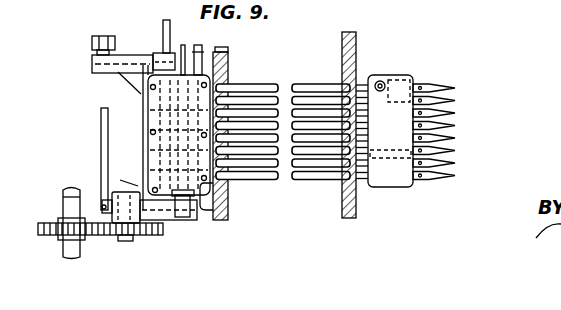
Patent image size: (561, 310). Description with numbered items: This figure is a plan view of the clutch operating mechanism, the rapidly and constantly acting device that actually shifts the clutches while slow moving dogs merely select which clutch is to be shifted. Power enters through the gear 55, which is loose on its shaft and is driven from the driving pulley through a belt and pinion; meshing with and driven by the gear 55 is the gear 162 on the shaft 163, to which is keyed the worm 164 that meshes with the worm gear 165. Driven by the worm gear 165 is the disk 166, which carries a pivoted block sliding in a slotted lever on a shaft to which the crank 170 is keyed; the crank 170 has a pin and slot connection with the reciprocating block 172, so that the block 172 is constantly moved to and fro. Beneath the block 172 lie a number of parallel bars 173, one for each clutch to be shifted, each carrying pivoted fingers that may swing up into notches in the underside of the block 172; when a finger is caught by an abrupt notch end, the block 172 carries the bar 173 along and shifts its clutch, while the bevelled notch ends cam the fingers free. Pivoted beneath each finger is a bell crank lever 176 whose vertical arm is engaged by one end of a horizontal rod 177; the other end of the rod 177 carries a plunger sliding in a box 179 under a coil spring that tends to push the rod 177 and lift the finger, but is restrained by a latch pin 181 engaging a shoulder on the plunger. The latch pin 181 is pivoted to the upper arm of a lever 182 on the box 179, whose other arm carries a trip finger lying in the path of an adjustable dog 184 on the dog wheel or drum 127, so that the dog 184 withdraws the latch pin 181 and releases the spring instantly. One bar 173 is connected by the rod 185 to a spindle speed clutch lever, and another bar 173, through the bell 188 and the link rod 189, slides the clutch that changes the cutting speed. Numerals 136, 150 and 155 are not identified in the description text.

The gear 55 is at (59, 224).
The drum 127 is at (453, 36).
The member 136 is at (446, 2).
The member 150 is at (550, 9).
The member 155 is at (482, 15).
The gear 162 is at (152, 237).
The shaft 163 is at (120, 180).
The worm 164 is at (102, 176).
The worm gear 165 is at (149, 87).
The disk 166 is at (101, 113).
The crank 170 is at (180, 218).
The reciprocating block 172 is at (207, 213).
The parallel bars 173 is at (162, 23).
The bell crank lever 176 is at (253, 117).
The horizontal rod 177 is at (314, 105).
The box 179 is at (398, 173).
The latch pin 181 is at (382, 80).
The lever 182 is at (453, 92).
The dog 184 is at (367, 109).
The rod 185 is at (204, 50).
The bell 188 is at (91, 63).
The link rod 189 is at (102, 35).